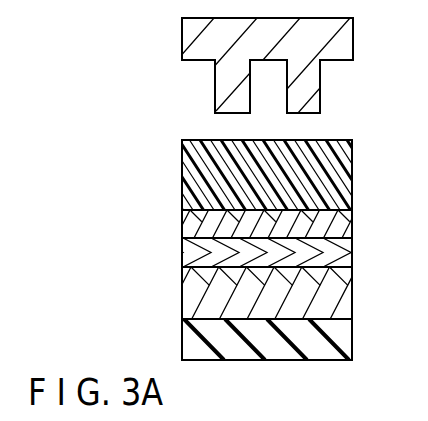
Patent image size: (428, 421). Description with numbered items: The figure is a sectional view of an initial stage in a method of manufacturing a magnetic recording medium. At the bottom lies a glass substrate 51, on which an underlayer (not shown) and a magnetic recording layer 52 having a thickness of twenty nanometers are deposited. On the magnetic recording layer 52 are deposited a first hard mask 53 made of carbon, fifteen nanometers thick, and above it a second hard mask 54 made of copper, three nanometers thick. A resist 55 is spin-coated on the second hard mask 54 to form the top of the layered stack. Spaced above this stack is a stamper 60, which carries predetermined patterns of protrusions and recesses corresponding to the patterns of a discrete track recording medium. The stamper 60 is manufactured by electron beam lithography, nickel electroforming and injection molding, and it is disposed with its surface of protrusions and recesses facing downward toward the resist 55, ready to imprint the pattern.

The stamper 60 is at (188, 36).
The resist 55 is at (187, 175).
The second hard mask 54 is at (186, 225).
The first hard mask 53 is at (186, 254).
The magnetic recording layer 52 is at (186, 295).
The glass substrate 51 is at (186, 343).